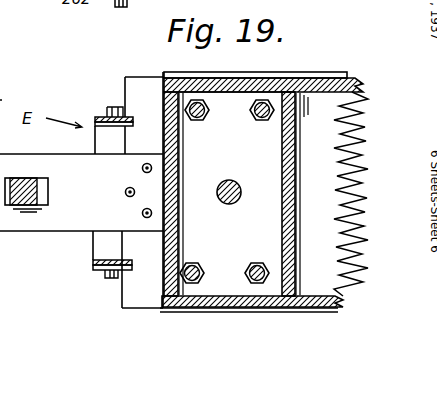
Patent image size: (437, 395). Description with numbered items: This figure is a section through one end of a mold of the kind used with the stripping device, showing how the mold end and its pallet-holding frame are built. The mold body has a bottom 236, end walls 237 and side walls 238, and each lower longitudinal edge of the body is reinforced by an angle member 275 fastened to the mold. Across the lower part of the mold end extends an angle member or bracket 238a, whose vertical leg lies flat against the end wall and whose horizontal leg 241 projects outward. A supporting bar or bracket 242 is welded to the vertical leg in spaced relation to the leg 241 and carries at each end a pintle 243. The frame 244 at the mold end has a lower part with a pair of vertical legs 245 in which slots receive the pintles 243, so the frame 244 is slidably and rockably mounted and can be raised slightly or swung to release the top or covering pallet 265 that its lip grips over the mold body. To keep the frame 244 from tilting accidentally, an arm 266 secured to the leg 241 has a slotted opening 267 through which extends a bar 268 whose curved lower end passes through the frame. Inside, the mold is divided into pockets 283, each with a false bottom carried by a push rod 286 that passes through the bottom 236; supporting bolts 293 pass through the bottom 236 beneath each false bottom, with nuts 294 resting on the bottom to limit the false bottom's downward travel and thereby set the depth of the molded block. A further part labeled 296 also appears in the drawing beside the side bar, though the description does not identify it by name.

The bottom 236 is at (361, 194).
The end walls 237 is at (163, 100).
The side walls 238 is at (282, 62).
The angle member or bracket 238a is at (127, 284).
The horizontal leg 241 is at (127, 297).
The supporting bar or bracket 242 is at (112, 230).
The pintle 243 is at (107, 107).
The frame 244 is at (94, 243).
The vertical legs 245 is at (100, 132).
The top or covering pallet 265 is at (12, 86).
The arm 266 is at (19, 138).
The slotted opening 267 is at (48, 186).
The bar 268 is at (40, 194).
The angle member 275 is at (341, 64).
The cells or pockets 283 is at (323, 128).
The push rod 286 is at (233, 204).
The supporting bolts 293 is at (258, 121).
The nuts 294 is at (368, 116).
The side bar 296 is at (290, 214).